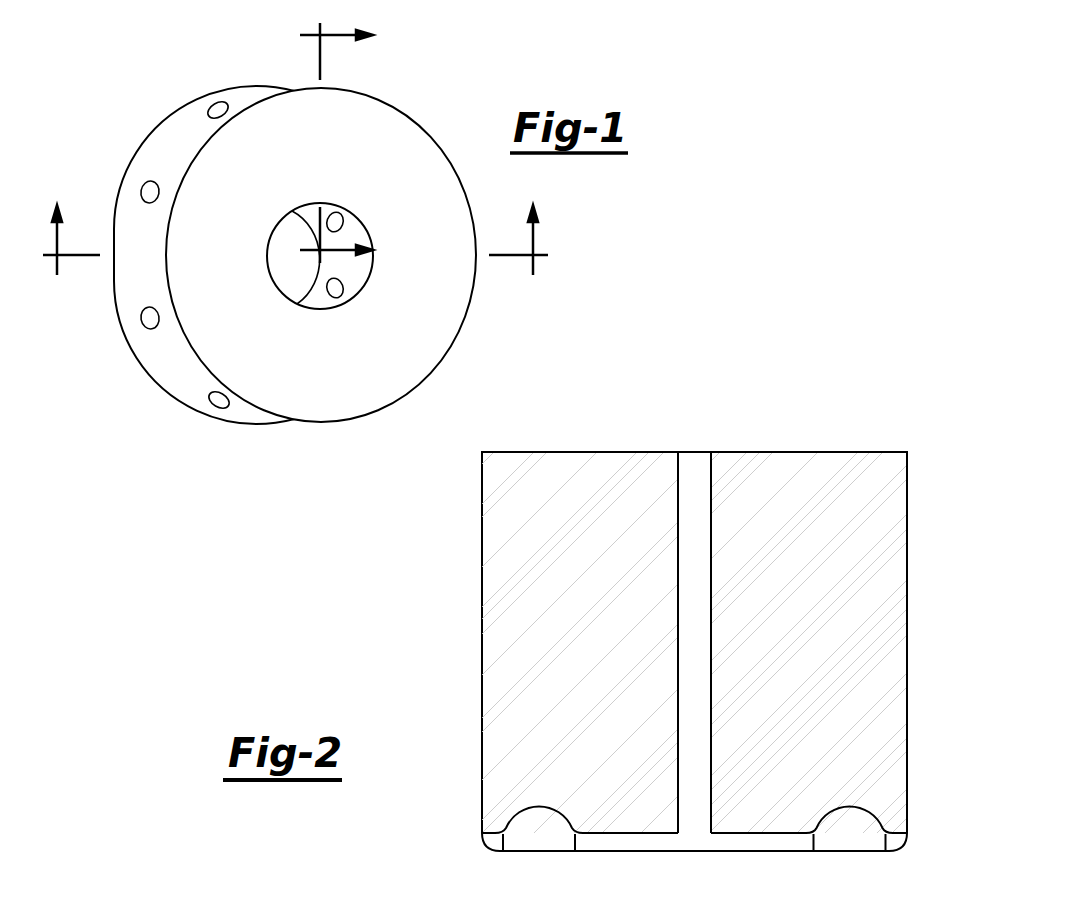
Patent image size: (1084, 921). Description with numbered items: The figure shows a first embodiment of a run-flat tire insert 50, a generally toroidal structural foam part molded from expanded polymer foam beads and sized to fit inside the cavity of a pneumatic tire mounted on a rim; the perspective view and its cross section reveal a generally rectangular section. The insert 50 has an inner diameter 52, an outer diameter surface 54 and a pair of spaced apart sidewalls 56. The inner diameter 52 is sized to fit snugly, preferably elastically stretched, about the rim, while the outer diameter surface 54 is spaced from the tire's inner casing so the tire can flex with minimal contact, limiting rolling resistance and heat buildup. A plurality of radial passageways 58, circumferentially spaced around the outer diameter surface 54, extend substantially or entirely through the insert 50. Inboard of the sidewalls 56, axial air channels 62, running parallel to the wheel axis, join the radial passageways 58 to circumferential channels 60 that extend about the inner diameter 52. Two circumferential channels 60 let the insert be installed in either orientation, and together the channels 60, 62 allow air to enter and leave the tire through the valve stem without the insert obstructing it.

In FIG. 1, the run-flat tire insert 50 is at (413, 92).
In FIG. 2, the run-flat tire insert 50 is at (635, 636).
In FIG. 2, the inner diameter 52 is at (752, 862).
In FIG. 2, the outer diameter surface 54 is at (800, 452).
In FIG. 2, the sidewalls 56 is at (907, 560).
In FIG. 2, the radial passageways 58 is at (694, 452).
In FIG. 2, the circumferential channels 60 is at (850, 836).
In FIG. 2, the axial air channels 62 is at (627, 838).